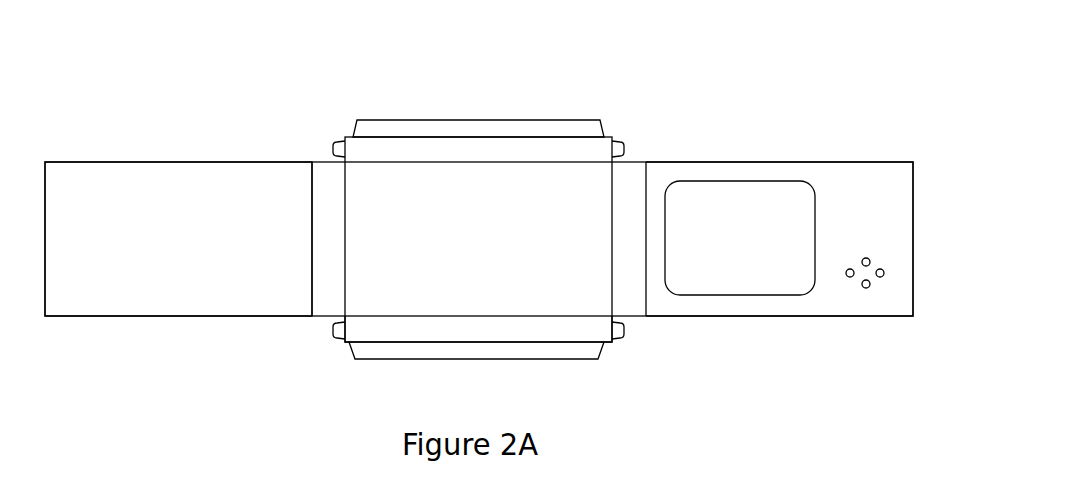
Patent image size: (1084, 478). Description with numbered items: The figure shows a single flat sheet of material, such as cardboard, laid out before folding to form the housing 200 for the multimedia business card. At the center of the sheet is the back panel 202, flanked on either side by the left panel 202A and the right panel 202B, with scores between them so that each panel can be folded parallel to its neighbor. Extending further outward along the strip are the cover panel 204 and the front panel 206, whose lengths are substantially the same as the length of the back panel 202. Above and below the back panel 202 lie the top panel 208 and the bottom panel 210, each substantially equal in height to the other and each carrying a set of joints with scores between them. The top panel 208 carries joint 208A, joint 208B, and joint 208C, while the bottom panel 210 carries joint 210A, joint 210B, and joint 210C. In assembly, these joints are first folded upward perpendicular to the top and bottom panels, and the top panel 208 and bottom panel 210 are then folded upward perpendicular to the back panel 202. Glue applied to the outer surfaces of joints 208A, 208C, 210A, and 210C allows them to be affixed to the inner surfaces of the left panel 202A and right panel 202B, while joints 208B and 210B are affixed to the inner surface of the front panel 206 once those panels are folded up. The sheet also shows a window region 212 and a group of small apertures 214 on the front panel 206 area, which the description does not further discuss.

The housing 200 is at (630, 363).
The back panel 202 is at (380, 279).
The left panel 202A is at (325, 255).
The right panel 202B is at (630, 182).
The cover panel 204 is at (186, 162).
The front panel 206 is at (845, 198).
The top panel 208 is at (368, 148).
The joint 208A is at (328, 148).
The joint 208B is at (500, 120).
The joint 208C is at (628, 143).
The bottom panel 210 is at (518, 329).
The joint 210A is at (333, 330).
The joint 210B is at (417, 360).
The joint 210C is at (626, 331).
The display window 212 is at (745, 207).
The sensor apertures 214 is at (860, 283).